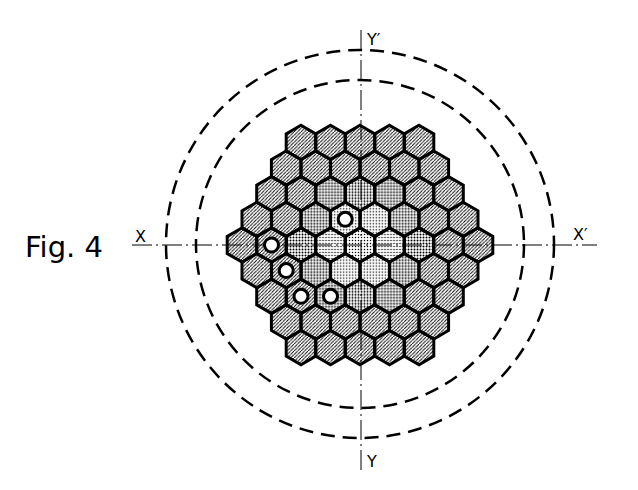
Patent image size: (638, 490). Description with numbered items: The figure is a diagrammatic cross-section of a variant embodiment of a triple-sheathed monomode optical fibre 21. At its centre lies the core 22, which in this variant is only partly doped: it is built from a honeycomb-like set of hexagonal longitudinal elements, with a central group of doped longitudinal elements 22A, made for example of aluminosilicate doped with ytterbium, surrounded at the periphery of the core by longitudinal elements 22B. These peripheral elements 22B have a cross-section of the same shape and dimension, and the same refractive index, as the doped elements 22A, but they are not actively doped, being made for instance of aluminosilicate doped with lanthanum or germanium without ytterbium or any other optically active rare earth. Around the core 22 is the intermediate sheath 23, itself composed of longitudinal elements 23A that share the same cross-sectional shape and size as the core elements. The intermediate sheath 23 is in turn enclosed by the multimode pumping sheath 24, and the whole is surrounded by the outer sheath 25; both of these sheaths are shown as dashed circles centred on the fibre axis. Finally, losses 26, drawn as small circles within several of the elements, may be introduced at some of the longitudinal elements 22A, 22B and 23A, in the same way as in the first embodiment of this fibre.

The optical fibre 21 is at (184, 59).
The core 22 is at (362, 254).
The doped longitudinal elements 22A is at (420, 281).
The longitudinal elements 22B is at (313, 192).
The intermediate sheath 23 is at (396, 191).
The longitudinal elements 23A is at (296, 140).
The multimode pumping sheath 24 is at (442, 120).
The outer sheath 25 is at (429, 80).
The losses 26 is at (345, 219).